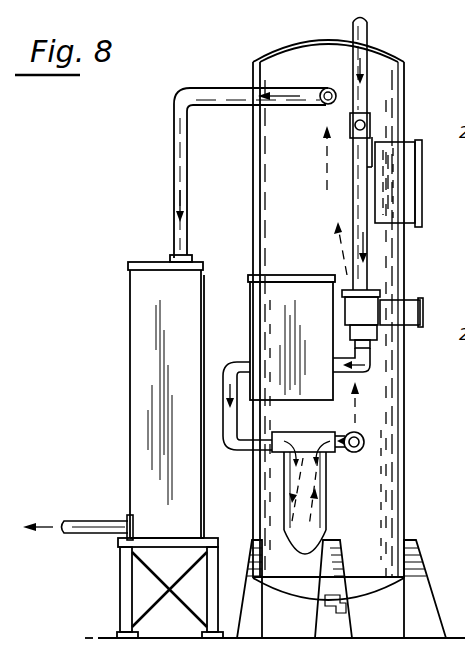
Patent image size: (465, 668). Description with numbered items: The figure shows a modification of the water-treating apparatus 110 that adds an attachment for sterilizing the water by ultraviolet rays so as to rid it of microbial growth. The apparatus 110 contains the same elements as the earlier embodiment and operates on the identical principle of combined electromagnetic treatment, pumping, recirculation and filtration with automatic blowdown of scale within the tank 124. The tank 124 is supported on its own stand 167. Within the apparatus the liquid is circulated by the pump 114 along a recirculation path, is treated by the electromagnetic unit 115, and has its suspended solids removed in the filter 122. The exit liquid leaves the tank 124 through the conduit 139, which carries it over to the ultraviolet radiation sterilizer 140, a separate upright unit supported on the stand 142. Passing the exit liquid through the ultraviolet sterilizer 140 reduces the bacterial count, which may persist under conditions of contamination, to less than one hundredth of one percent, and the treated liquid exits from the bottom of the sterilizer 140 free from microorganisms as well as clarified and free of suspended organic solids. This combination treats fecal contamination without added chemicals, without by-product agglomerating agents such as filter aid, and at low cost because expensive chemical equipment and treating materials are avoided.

The apparatus 110 is at (242, 72).
The pump 114 is at (382, 326).
The electromagnetic unit 115 is at (294, 296).
The filter 122 is at (322, 494).
The tank 124 is at (392, 458).
The conduit 139 is at (180, 185).
The ultraviolet radiation sterilizer 140 is at (155, 365).
The stand for the ultraviolet unit 142 is at (122, 576).
The stand for the tank 167 is at (389, 552).